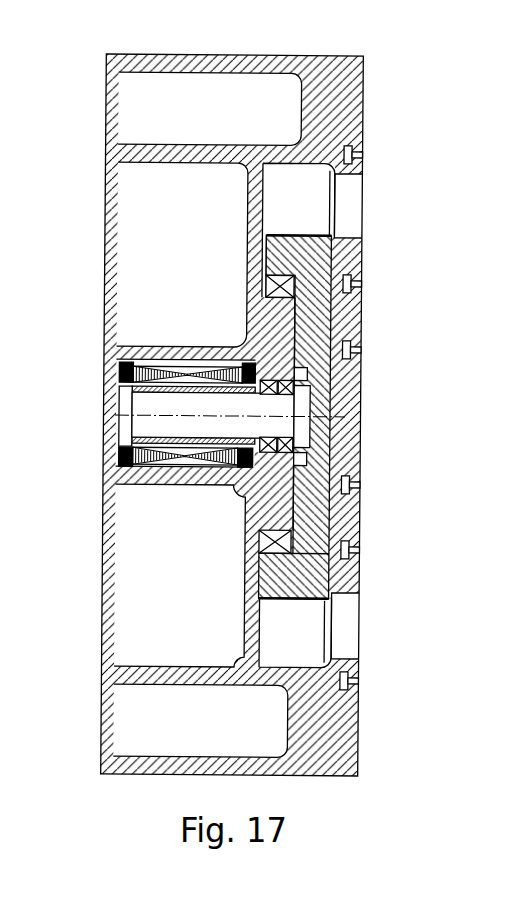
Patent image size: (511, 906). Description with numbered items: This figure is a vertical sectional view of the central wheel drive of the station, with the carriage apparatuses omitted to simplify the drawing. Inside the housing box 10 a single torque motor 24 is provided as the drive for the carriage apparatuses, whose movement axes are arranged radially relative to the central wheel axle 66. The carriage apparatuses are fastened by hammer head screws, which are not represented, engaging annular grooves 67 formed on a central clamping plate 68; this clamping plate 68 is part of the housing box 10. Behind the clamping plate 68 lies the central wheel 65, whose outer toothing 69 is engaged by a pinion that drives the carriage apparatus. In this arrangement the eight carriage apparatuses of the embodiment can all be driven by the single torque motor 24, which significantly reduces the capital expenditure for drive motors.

The housing box 10 is at (338, 737).
The torque motor 24 is at (148, 472).
The central wheel 65 is at (309, 269).
The central wheel axle 66 is at (342, 416).
The annular grooves 67 is at (355, 547).
The central clamping plate 68 is at (360, 570).
The outer toothing 69 is at (328, 599).